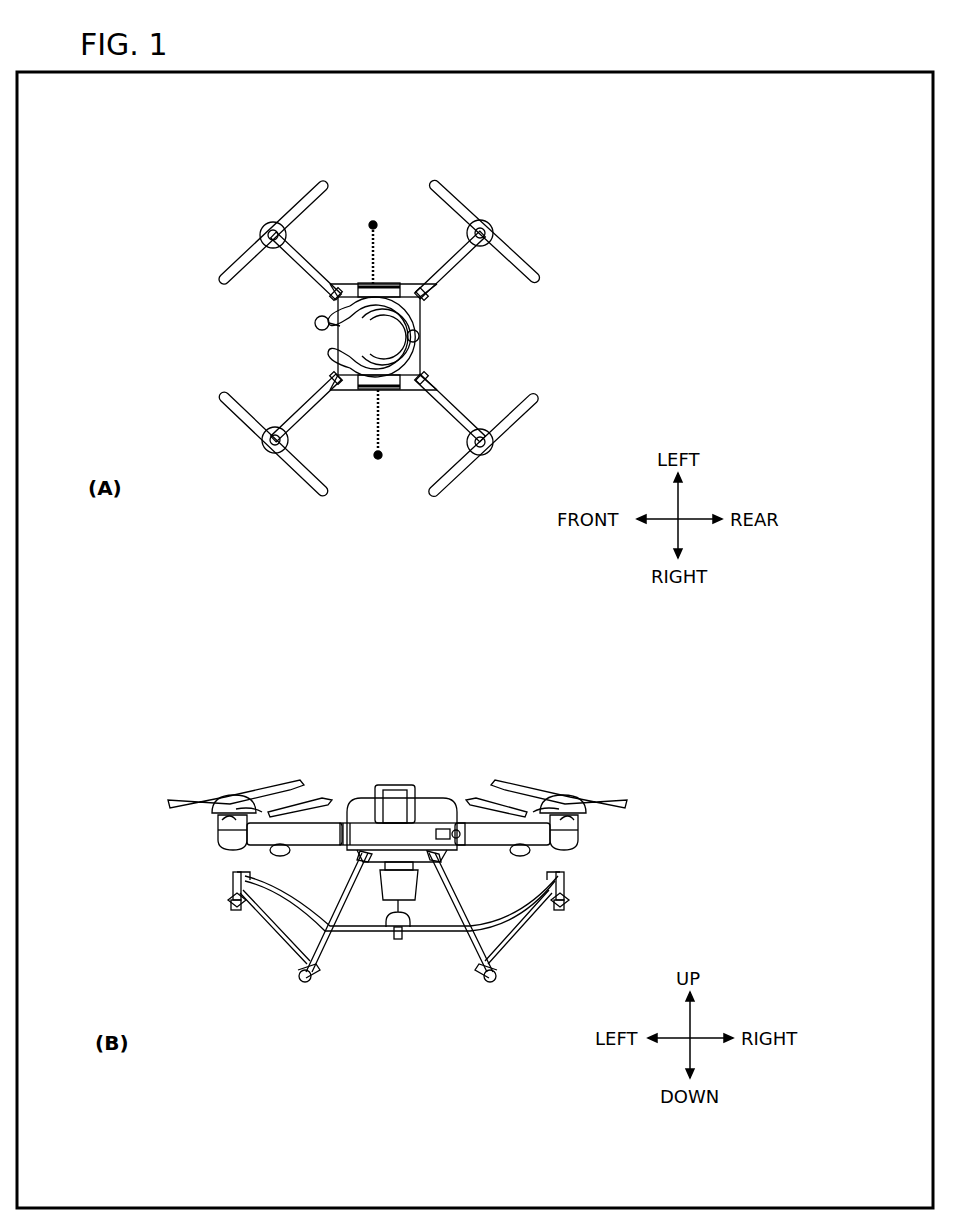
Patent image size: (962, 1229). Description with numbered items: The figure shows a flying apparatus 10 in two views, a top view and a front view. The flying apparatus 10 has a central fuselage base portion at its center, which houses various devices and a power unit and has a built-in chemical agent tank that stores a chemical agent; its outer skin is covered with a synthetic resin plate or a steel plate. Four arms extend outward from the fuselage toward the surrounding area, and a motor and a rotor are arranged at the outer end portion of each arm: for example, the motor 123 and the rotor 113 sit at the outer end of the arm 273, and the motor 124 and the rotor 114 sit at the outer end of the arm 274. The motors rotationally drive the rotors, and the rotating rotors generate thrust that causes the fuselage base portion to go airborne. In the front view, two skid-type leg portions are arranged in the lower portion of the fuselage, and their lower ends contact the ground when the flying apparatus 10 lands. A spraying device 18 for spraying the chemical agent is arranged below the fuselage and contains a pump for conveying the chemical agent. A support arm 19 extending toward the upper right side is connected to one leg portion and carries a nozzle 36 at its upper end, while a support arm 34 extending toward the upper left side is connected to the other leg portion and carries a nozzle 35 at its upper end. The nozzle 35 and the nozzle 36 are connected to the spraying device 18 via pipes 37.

The flying apparatus 10 is at (374, 148).
The spraying device 18 is at (414, 888).
The support arm 19 is at (535, 917).
The support arm 34 is at (266, 915).
The nozzle 35 is at (237, 915).
The nozzle 36 is at (560, 915).
The pipes 37 is at (432, 936).
The rotor 113 is at (540, 280).
The rotor 114 is at (540, 395).
The motor 123 is at (493, 224).
The motor 124 is at (495, 437).
The arm 273 is at (460, 270).
The arm 274 is at (455, 404).